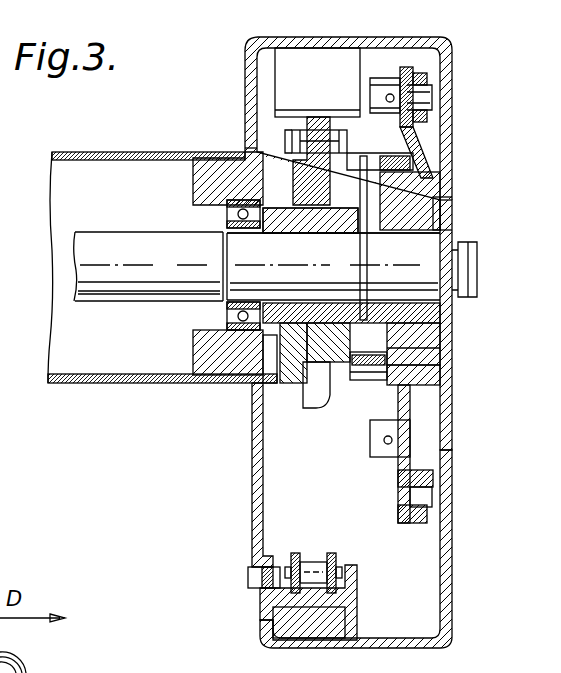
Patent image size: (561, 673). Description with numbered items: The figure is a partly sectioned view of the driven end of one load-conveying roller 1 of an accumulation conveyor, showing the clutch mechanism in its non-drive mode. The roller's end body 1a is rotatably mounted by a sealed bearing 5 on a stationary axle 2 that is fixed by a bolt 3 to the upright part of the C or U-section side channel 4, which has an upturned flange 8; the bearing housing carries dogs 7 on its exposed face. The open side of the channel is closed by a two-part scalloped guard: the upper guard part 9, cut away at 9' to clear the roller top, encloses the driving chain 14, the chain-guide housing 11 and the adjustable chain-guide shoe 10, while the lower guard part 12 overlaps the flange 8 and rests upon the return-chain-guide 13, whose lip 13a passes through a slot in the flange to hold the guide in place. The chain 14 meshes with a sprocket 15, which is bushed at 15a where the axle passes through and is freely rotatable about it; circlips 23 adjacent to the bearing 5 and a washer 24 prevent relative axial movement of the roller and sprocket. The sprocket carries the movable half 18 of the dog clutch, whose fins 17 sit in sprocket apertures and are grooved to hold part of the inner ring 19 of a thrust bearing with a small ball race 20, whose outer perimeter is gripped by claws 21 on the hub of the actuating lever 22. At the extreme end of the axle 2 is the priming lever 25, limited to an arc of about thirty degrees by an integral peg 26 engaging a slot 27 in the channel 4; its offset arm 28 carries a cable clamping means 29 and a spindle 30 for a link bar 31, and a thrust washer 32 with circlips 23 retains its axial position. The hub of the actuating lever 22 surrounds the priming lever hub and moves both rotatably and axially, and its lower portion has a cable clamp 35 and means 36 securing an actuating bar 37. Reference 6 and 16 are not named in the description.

The load-conveying roller 1 is at (132, 152).
The end body 1a is at (207, 378).
The stationary axle 2 is at (112, 287).
The bolt 3 is at (478, 270).
The side channel 4 is at (452, 520).
The sealed bearing 5 is at (240, 205).
The cover side wall 6 is at (452, 432).
The dogs 7 is at (265, 370).
The upturned flange 8 is at (262, 606).
The upper guard part 9 is at (329, 118).
The cut-away 9' is at (233, 130).
The adjustable chain-guide shoe 10 is at (320, 118).
The chain-guide housing 11 is at (300, 78).
The lower scalloped guard part 12 is at (253, 504).
The return-chain-guide 13 is at (284, 604).
The lip 13a is at (250, 578).
The chain 14 is at (282, 140).
The sprocket 15 is at (314, 393).
The bush 15a is at (338, 233).
The disc 16 is at (424, 350).
The fins 17 is at (430, 372).
The movable half of the dog clutch 18 is at (288, 372).
The inner ring 19 is at (412, 386).
The ball race 20 is at (410, 176).
The claws 21 is at (415, 160).
The actuating lever 22 is at (440, 180).
The circlips 23 is at (230, 320).
The washer 24 is at (400, 218).
The priming lever 25 is at (418, 336).
The peg 26 is at (447, 204).
The slot 27 is at (455, 218).
The offset arm 28 is at (420, 136).
The cable clamping means 29 is at (410, 88).
The spindle 30 is at (420, 108).
The link bar 31 is at (420, 76).
The thrust washer 32 is at (448, 238).
The cable clamp 35 is at (400, 442).
The securing means 36 is at (434, 480).
The actuating bar 37 is at (410, 522).